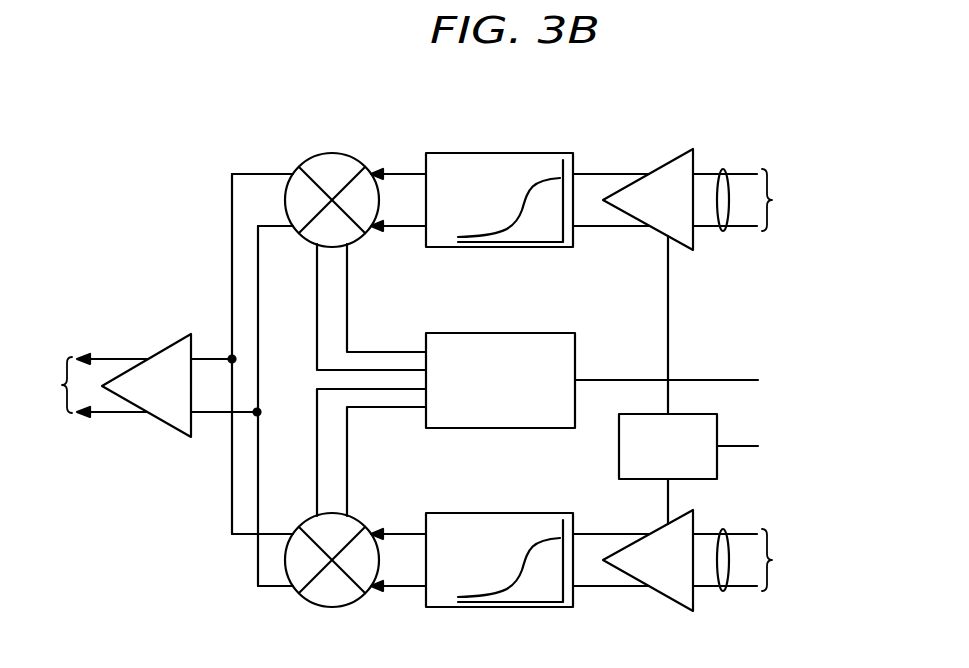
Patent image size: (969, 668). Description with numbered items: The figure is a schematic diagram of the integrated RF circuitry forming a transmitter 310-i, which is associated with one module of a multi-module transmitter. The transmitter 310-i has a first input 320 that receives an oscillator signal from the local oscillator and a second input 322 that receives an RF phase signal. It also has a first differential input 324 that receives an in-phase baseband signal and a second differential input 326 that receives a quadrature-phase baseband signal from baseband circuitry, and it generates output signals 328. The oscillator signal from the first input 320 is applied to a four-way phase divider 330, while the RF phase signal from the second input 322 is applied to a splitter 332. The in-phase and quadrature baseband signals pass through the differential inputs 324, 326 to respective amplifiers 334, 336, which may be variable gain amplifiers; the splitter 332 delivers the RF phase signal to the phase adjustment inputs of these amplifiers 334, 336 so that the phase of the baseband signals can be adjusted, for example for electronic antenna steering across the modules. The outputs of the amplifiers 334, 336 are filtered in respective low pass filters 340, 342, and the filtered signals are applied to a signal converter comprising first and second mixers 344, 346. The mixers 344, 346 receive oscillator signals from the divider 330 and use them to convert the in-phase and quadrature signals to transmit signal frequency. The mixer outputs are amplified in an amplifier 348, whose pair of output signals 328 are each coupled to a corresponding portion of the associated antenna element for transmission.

The transmitter 310-i is at (748, 83).
The first input 320 is at (689, 380).
The second input 322 is at (726, 444).
The first differential input 324 is at (723, 171).
The second differential input 326 is at (723, 592).
The output signals 328 is at (89, 385).
The four-way phase divider 330 is at (474, 333).
The splitter 332 is at (619, 447).
The amplifier 334 is at (677, 151).
The amplifier 336 is at (674, 605).
The low pass filter 340 is at (460, 153).
The low pass filter 342 is at (460, 513).
The first mixer 344 is at (330, 152).
The second mixer 346 is at (325, 608).
The amplifier 348 is at (174, 344).